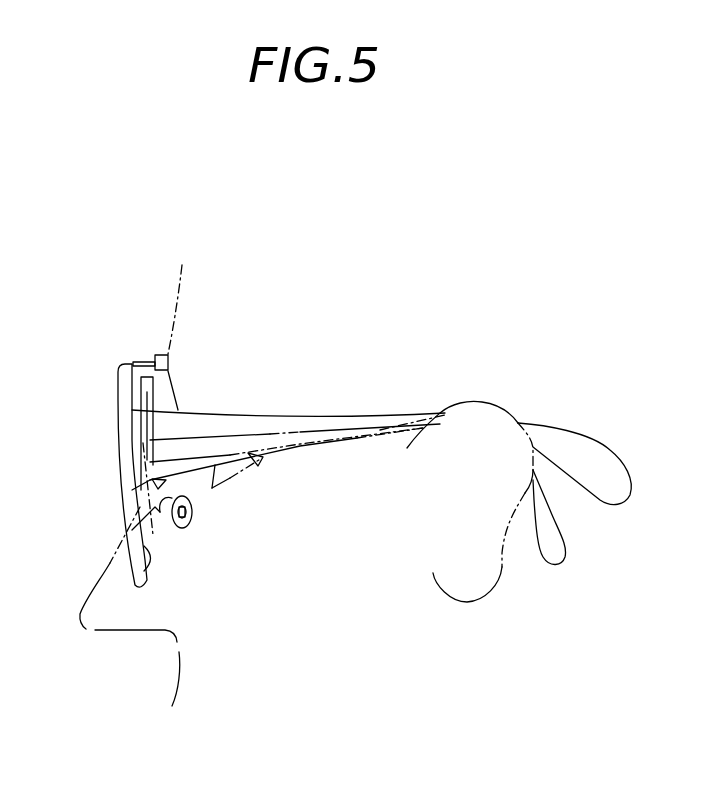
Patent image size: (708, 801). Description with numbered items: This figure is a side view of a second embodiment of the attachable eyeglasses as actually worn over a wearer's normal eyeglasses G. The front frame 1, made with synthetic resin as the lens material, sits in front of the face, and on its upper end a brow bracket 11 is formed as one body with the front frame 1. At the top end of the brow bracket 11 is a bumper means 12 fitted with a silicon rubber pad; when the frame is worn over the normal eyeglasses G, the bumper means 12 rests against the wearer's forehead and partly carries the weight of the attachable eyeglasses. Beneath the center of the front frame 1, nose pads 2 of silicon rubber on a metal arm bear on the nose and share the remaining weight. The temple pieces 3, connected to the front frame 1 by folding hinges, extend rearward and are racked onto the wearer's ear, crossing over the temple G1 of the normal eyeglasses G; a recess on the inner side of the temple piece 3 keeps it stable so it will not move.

The front frame 1 is at (122, 393).
The nose pads 2 is at (148, 558).
The temple pieces 3 is at (322, 421).
The brow bracket 11 is at (135, 360).
The bumper means 12 is at (163, 356).
The normal eyeglasses G is at (147, 392).
The temple of the normal eyeglasses G1 is at (360, 442).